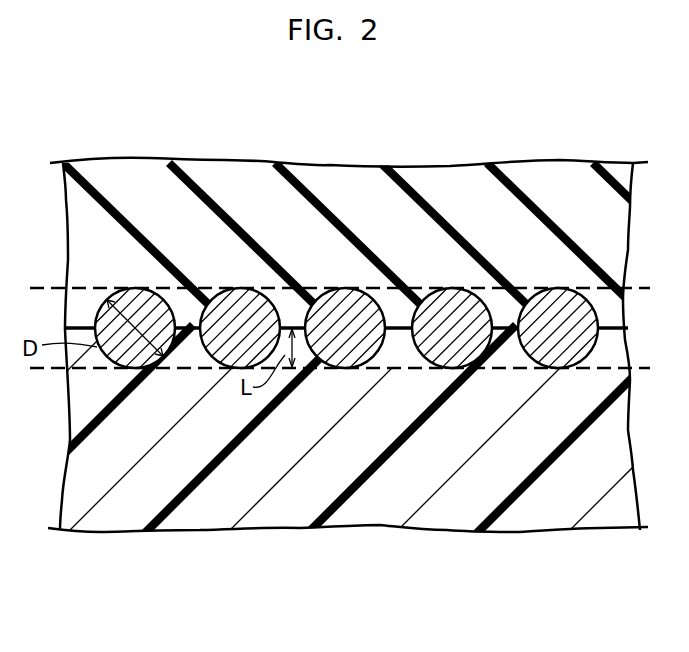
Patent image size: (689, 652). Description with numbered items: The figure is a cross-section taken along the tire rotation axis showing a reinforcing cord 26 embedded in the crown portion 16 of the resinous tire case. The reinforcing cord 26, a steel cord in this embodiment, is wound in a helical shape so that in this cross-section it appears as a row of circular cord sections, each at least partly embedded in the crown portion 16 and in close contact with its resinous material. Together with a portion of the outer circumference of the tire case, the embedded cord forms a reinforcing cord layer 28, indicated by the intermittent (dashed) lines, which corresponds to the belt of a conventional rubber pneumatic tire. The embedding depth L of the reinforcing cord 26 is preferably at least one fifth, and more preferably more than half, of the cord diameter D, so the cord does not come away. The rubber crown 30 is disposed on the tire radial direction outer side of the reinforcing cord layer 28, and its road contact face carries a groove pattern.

The crown portion 16 is at (440, 515).
The reinforcing cord 26 is at (112, 297).
The reinforcing cord layer 28 is at (310, 285).
The crown 30 is at (537, 177).